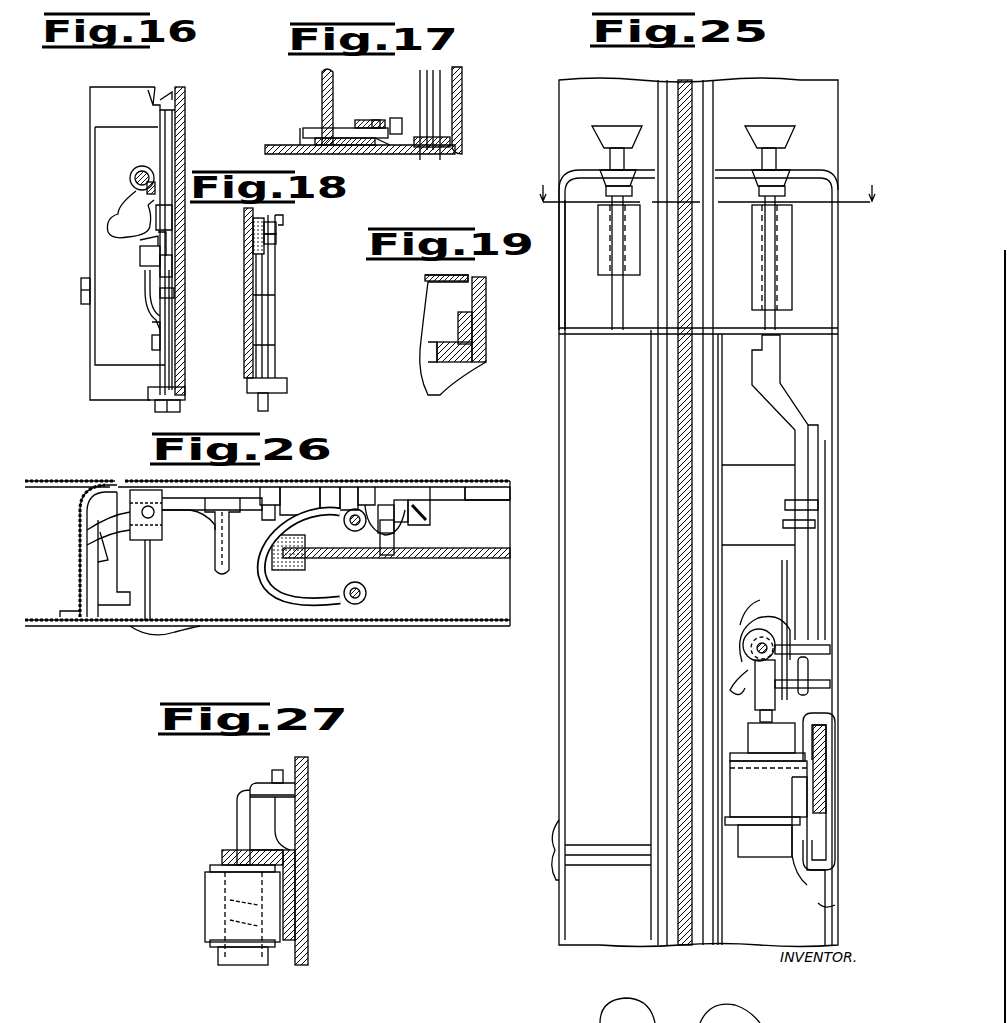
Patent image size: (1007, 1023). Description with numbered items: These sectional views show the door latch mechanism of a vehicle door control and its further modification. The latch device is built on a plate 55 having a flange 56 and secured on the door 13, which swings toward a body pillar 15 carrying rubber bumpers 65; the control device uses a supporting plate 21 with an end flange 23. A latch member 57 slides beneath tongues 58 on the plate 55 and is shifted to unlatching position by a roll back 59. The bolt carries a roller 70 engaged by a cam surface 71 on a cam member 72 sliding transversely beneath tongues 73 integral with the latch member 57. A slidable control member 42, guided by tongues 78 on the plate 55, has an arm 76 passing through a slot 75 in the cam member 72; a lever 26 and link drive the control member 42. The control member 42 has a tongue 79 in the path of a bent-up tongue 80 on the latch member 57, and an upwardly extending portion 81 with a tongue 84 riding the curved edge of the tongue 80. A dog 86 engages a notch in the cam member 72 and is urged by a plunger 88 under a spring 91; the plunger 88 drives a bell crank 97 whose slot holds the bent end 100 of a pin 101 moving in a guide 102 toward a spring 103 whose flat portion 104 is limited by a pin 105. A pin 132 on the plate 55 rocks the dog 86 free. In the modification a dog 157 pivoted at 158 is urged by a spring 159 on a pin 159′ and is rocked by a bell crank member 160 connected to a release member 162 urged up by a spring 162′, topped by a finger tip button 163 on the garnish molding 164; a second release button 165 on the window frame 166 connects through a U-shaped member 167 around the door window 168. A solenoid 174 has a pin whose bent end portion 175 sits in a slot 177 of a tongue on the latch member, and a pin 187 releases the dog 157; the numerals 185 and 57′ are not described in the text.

In FIG. 19, the door 13 is at (470, 277).
In FIG. 19, the body pillar 15 is at (428, 308).
In FIG. 19, the supporting plate 21 is at (488, 290).
In FIG. 19, the end flange 23 is at (474, 320).
In FIG. 16, the control member 42 is at (182, 412).
In FIG. 16, the plate 55 is at (185, 80).
In FIG. 17, the plate 55 is at (273, 145).
In FIG. 18, the plate 55 is at (244, 244).
In FIG. 16, the flange 56 is at (92, 98).
In FIG. 17, the flange 56 is at (463, 78).
In FIG. 16, the latch member 57 is at (175, 243).
In FIG. 17, the latch member 57 is at (298, 128).
In FIG. 18, the latch member 57 is at (255, 212).
In FIG. 16, the tongues 58 is at (165, 263).
In FIG. 17, the roll back 59 is at (450, 140).
In FIG. 19, the bumpers 65 is at (488, 352).
In FIG. 16, the roller 70 is at (130, 178).
In FIG. 16, the cam surface 71 is at (108, 222).
In FIG. 16, the cam member 72 is at (99, 153).
In FIG. 17, the cam member 72 is at (322, 77).
In FIG. 17, the tongues 73 is at (308, 128).
In FIG. 16, the slot 75 is at (155, 331).
In FIG. 17, the slot 75 is at (345, 145).
In FIG. 16, the arm 76 is at (152, 350).
In FIG. 17, the arm 76 is at (378, 143).
In FIG. 16, the tongues 78 is at (148, 402).
In FIG. 18, the tongues 78 is at (290, 385).
In FIG. 17, the tongue 79 is at (398, 118).
In FIG. 18, the tongue 79 is at (280, 250).
In FIG. 17, the tongue 80 is at (378, 120).
In FIG. 18, the tongue 80 is at (280, 242).
In FIG. 17, the upwardly extending portion 81 is at (366, 120).
In FIG. 18, the upwardly extending portion 81 is at (280, 228).
In FIG. 18, the tongue 84 is at (285, 220).
In FIG. 16, the dog 86 is at (178, 103).
In FIG. 16, the plunger 88 is at (128, 214).
In FIG. 16, the spring 91 is at (168, 133).
In FIG. 16, the bell crank 97 is at (173, 166).
In FIG. 16, the bent end 100 is at (176, 216).
In FIG. 16, the pin 101 is at (142, 240).
In FIG. 16, the guide 102 is at (140, 262).
In FIG. 16, the spring 103 is at (178, 356).
In FIG. 25, the spring 103 is at (833, 582).
In FIG. 16, the flat portion 104 is at (145, 283).
In FIG. 16, the pin 105 is at (170, 294).
In FIG. 16, the pin 132 is at (155, 90).
In FIG. 25, the dog 157 is at (805, 485).
In FIG. 26, the dog 157 is at (343, 486).
In FIG. 26, the pivot 158 is at (276, 486).
In FIG. 25, the spring 159 is at (838, 905).
In FIG. 25, the pin 159′ is at (788, 800).
In FIG. 26, the bell crank member 160 is at (388, 505).
In FIG. 25, the finger tip release member 162 is at (786, 410).
In FIG. 26, the finger tip release member 162 is at (298, 486).
In FIG. 25, the spring 162′ is at (812, 440).
In FIG. 26, the spring 162′ is at (370, 490).
In FIG. 25, the finger tip button 163 is at (790, 132).
In FIG. 26, the finger tip button 163 is at (344, 527).
In FIG. 25, the garnish molding 164 is at (828, 170).
In FIG. 25, the second release button 165 is at (606, 130).
In FIG. 26, the second release button 165 is at (356, 605).
In FIG. 25, the window frame 166 is at (578, 170).
In FIG. 25, the U-shaped member 167 is at (640, 276).
In FIG. 26, the U-shaped member 167 is at (268, 582).
In FIG. 25, the door window 168 is at (680, 368).
In FIG. 26, the door window 168 is at (466, 548).
In FIG. 27, the door window 168 is at (282, 772).
In FIG. 25, the solenoid 174 is at (812, 710).
In FIG. 26, the solenoid 174 is at (325, 552).
In FIG. 27, the solenoid 174 is at (205, 897).
In FIG. 25, the bent end portion 175 is at (818, 680).
In FIG. 26, the bent end portion 175 is at (402, 500).
In FIG. 27, the bent end portion 175 is at (258, 785).
In FIG. 27, the slot 177 is at (280, 818).
In FIG. 26, the block 185 is at (330, 490).
In FIG. 25, the pin 187 is at (788, 515).
In FIG. 25, the lever 26 is at (705, 185).
In FIG. 26, the bar 57′ is at (495, 490).